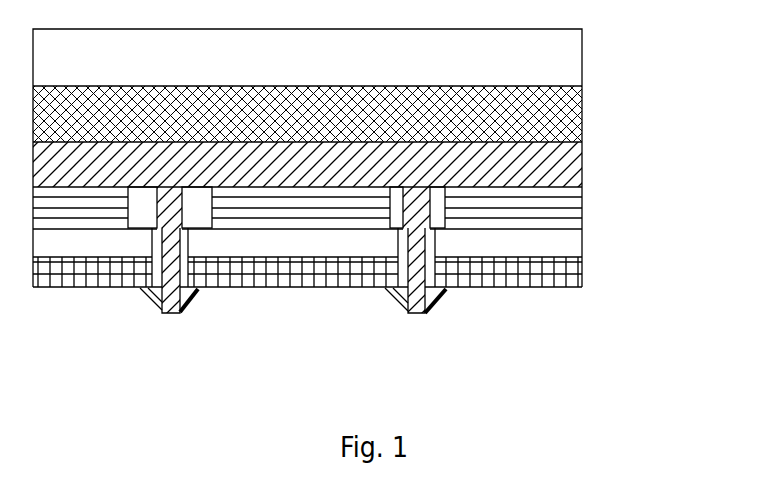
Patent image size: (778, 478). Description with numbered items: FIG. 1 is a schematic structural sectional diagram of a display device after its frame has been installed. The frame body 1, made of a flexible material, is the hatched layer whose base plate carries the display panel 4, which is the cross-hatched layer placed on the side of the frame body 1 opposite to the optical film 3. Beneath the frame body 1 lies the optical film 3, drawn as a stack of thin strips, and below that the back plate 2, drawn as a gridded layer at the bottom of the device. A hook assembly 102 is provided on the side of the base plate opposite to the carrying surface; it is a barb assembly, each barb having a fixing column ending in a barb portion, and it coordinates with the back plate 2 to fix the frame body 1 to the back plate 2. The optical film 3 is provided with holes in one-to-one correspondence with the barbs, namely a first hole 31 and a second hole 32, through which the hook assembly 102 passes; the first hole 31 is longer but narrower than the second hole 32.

The frame body 1 is at (540, 173).
The back plate 2 is at (545, 273).
The optical film 3 is at (543, 208).
The display panel 4 is at (538, 119).
The first hole 31 is at (195, 210).
The second hole 32 is at (440, 210).
The hook assembly 102 is at (172, 267).